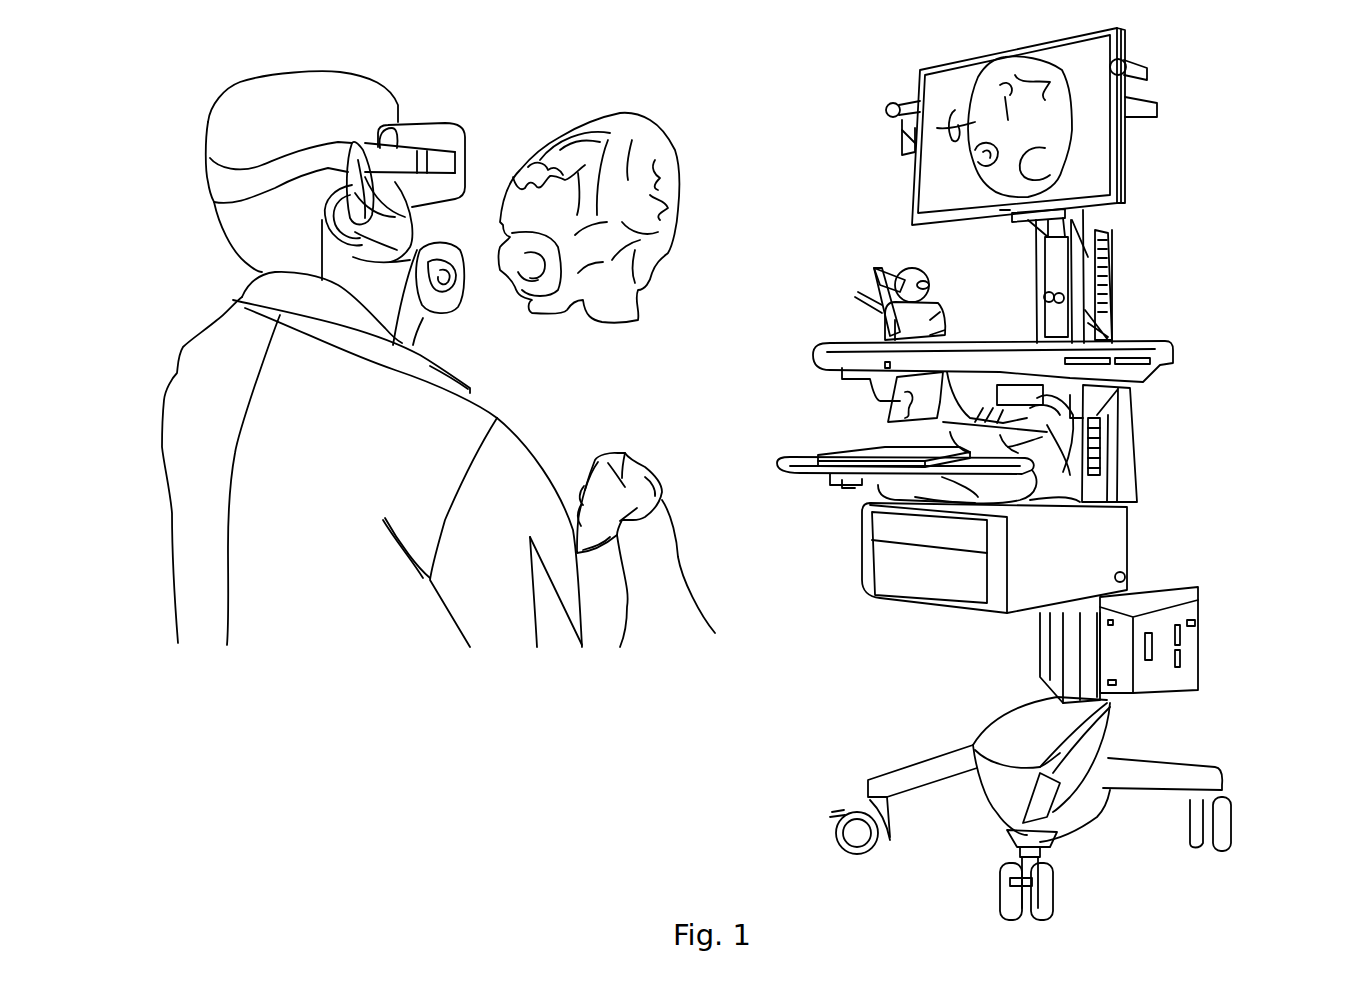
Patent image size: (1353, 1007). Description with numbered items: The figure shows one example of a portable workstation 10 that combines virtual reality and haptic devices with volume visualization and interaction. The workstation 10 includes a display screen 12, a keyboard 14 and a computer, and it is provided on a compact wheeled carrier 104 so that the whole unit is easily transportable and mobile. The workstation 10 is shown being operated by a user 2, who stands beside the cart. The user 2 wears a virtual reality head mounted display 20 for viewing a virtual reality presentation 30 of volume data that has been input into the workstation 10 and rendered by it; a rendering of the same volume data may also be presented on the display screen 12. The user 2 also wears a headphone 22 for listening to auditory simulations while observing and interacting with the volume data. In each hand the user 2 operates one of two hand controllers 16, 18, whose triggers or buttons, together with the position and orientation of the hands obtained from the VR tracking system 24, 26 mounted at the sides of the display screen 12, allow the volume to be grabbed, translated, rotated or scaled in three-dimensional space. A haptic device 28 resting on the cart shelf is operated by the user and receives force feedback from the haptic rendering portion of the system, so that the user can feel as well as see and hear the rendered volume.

The user 2 is at (333, 580).
The portable workstation 10 is at (1181, 315).
The display screen 12 is at (1082, 170).
The keyboard 14 is at (813, 448).
The hand controller 16 is at (662, 550).
The hand controller 18 is at (405, 348).
The virtual reality head mounted display 20 is at (403, 154).
The headphone 22 is at (343, 207).
The VR tracking system 24 is at (892, 108).
The VR tracking system 26 is at (1126, 67).
The haptic device 28 is at (888, 263).
The virtual reality presentation 30 is at (553, 188).
The compact wheeled carrier 104 is at (1113, 700).